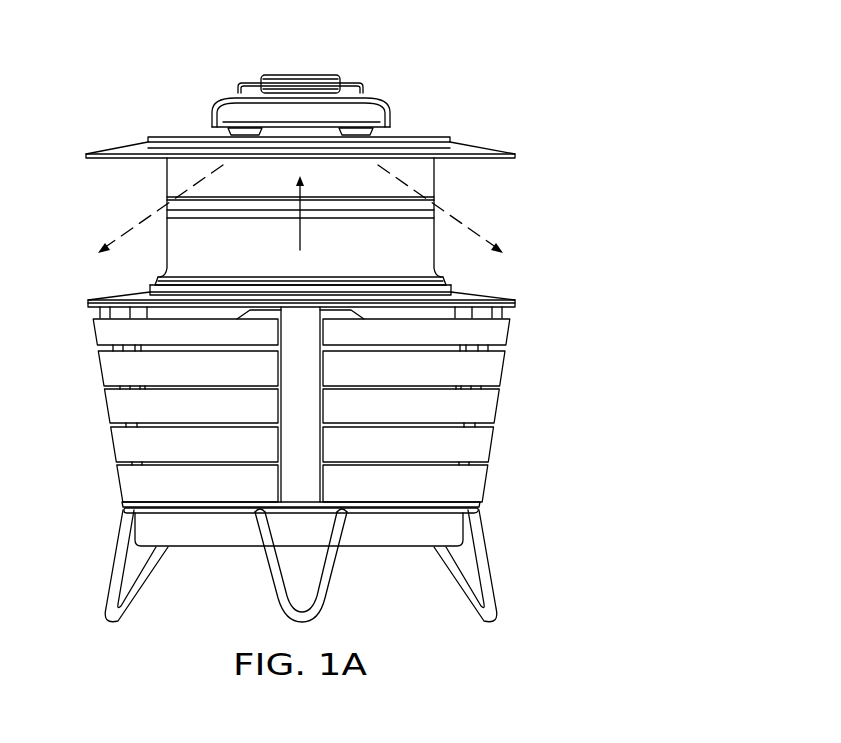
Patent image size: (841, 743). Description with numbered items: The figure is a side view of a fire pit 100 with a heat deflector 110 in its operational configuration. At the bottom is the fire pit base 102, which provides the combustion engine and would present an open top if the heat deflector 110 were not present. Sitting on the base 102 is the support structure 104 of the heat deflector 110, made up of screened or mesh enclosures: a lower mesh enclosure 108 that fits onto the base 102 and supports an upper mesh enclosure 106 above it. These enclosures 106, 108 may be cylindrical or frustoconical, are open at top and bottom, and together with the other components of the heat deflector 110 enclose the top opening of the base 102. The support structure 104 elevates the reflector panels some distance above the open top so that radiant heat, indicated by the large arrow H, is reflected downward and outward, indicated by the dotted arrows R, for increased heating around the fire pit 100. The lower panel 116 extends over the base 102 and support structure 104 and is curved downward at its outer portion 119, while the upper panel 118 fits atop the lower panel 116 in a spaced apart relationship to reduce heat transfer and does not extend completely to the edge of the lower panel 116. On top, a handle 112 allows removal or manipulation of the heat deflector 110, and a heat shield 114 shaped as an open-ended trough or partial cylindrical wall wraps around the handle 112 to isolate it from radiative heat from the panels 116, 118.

The fire pit 100 is at (653, 194).
The fire pit base 102 is at (497, 294).
The support structure 104 is at (162, 190).
The upper mesh enclosure 106 is at (434, 173).
The lower mesh enclosure 108 is at (437, 257).
The heat deflector 110 is at (478, 142).
The handle 112 is at (302, 75).
The heat shield 114 is at (383, 110).
The lower panel 116 is at (118, 150).
The upper panel 118 is at (188, 138).
The outer portion 119 is at (503, 148).